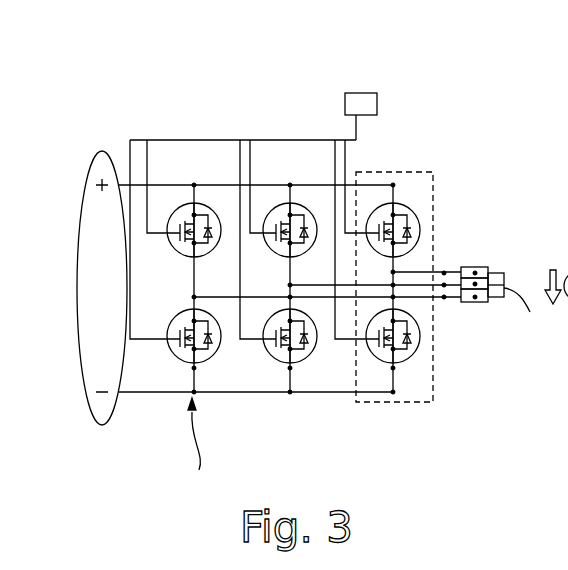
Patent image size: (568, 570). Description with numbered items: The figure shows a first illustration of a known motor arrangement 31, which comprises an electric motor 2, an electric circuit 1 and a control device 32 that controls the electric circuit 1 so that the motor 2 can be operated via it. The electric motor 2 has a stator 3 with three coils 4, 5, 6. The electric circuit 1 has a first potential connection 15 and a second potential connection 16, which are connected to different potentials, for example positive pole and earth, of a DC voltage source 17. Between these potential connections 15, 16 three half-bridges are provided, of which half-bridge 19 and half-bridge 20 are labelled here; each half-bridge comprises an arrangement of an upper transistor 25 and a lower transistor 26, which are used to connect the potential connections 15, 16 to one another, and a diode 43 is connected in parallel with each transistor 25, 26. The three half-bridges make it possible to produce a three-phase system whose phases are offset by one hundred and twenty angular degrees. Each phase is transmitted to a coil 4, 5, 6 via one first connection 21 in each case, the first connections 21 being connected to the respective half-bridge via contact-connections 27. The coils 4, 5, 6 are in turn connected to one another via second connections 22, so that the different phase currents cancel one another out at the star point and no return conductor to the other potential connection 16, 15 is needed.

The electric circuit 1 is at (290, 396).
The electric motor 2 is at (478, 245).
The stator 3 is at (483, 306).
The coil 4 is at (480, 268).
The coil 5 is at (490, 280).
The coil 6 is at (480, 302).
The first potential connection 15 is at (174, 184).
The second potential connection 16 is at (218, 394).
The DC voltage source 17 is at (84, 207).
The half-bridge 19 is at (297, 184).
The half-bridge 20 is at (375, 172).
The first connection 21 is at (445, 270).
The second connection 22 is at (504, 275).
The upper transistor 25 is at (183, 252).
The lower transistor 26 is at (184, 360).
The contact-connection 27 is at (194, 297).
The motor arrangement 31 is at (450, 114).
The control device 32 is at (356, 98).
The diode 43 is at (420, 236).